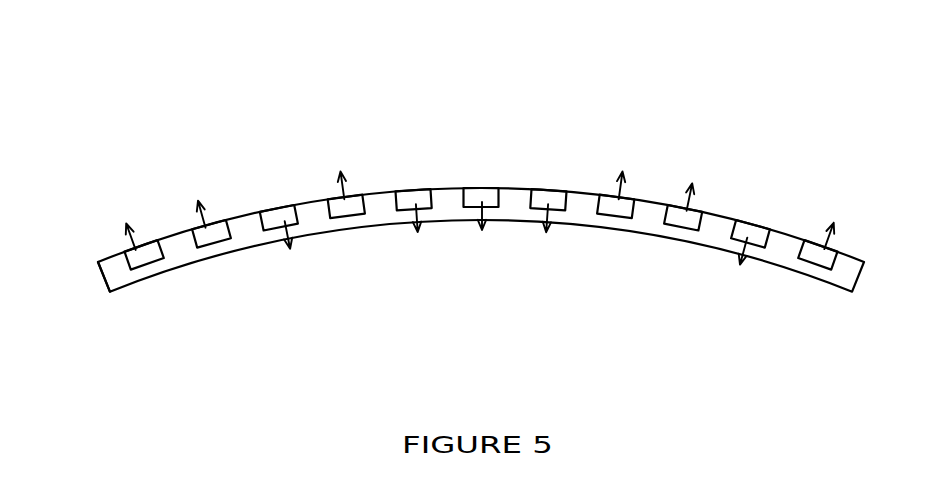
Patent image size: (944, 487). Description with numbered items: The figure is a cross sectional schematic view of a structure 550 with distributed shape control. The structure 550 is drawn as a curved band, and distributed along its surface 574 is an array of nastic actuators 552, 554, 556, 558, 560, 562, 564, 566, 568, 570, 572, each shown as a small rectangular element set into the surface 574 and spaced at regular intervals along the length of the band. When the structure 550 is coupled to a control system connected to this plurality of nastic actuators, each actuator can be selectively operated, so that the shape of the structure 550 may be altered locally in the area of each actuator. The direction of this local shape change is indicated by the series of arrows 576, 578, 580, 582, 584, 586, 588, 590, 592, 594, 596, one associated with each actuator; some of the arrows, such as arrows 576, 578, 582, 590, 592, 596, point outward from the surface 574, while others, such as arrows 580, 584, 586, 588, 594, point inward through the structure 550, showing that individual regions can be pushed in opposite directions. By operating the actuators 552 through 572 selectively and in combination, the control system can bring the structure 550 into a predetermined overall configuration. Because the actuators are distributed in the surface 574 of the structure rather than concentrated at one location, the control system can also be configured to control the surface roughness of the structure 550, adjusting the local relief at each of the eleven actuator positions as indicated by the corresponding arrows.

The structure with distributed shape control 550 is at (537, 85).
The nastic actuator 552 is at (143, 257).
The nastic actuator 554 is at (212, 234).
The nastic actuator 556 is at (282, 217).
The nastic actuator 558 is at (343, 210).
The nastic actuator 560 is at (405, 190).
The nastic actuator 562 is at (487, 190).
The nastic actuator 564 is at (550, 192).
The nastic actuator 566 is at (615, 216).
The nastic actuator 568 is at (692, 226).
The nastic actuator 570 is at (762, 227).
The nastic actuator 572 is at (822, 263).
The surface 574 is at (114, 256).
The arrow 576 is at (134, 247).
The arrow 578 is at (203, 222).
The arrow 580 is at (283, 228).
The arrow 582 is at (343, 194).
The arrow 584 is at (408, 220).
The arrow 586 is at (478, 217).
The arrow 588 is at (547, 213).
The arrow 590 is at (619, 197).
The arrow 592 is at (683, 206).
The arrow 594 is at (756, 258).
The arrow 596 is at (824, 248).